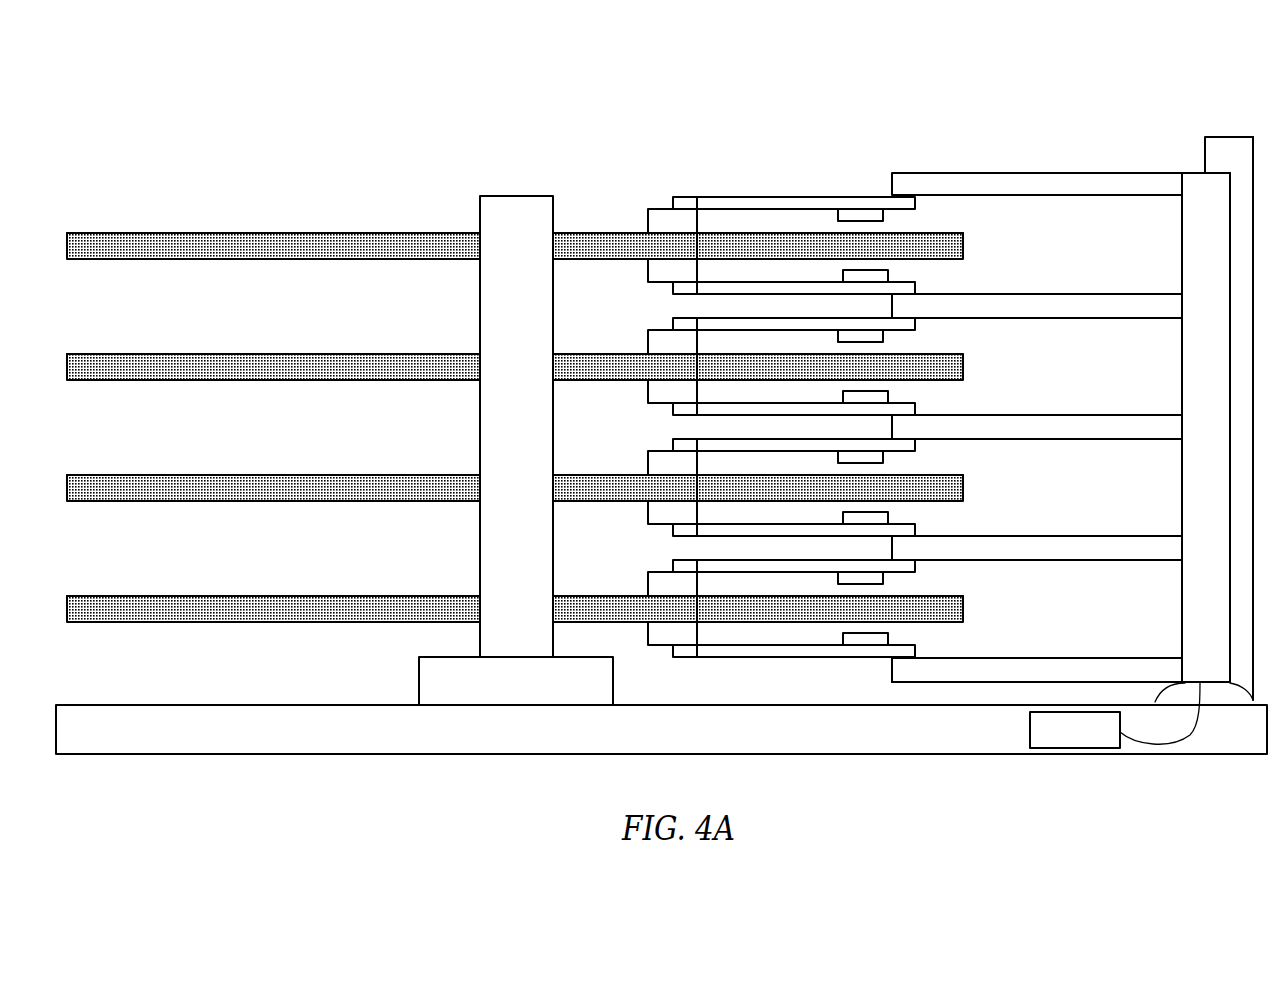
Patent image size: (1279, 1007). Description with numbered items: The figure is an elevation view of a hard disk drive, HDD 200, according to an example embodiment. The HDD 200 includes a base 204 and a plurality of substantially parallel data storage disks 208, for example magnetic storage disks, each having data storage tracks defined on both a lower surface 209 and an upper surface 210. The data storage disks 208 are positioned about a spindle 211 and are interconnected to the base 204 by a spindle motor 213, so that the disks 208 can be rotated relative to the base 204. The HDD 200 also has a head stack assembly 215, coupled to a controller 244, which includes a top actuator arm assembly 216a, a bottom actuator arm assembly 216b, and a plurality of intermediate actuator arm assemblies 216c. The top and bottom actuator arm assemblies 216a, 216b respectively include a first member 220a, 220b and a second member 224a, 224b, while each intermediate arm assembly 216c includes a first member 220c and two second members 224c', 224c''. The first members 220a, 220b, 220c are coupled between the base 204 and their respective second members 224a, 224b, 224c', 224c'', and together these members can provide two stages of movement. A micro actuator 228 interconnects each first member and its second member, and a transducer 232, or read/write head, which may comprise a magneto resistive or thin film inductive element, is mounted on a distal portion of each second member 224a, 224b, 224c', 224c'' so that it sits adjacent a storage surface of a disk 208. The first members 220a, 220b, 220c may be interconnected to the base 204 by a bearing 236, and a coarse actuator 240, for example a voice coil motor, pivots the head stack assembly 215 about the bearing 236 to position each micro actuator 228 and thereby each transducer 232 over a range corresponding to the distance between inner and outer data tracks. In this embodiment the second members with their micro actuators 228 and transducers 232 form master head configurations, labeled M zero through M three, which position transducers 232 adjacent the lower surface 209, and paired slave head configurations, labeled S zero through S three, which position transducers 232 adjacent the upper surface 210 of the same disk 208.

The HDD 200 is at (790, 78).
The base 204 is at (105, 755).
The data storage disks 208 is at (211, 196).
The lower surface 209 is at (345, 259).
The upper surface 210 is at (382, 233).
The spindle 211 is at (516, 426).
The spindle motor 213 is at (516, 681).
The head stack assembly 215 is at (1100, 106).
The top actuator arm assembly 216a is at (986, 131).
The bottom actuator arm assembly 216b is at (1065, 636).
The intermediate actuator arm assemblies 216c is at (1088, 270).
The first member 220a is at (905, 173).
The first member 220b is at (975, 657).
The first member 220c is at (992, 294).
The second member 224a is at (697, 198).
The second member 224b is at (707, 658).
The second member 224c' is at (794, 427).
The second member 224c'' is at (794, 371).
The micro actuator 228 is at (883, 215).
The transducer 232 is at (648, 220).
The bearing 236 is at (1180, 698).
The coarse actuator 240 is at (1205, 155).
The controller 244 is at (1075, 730).